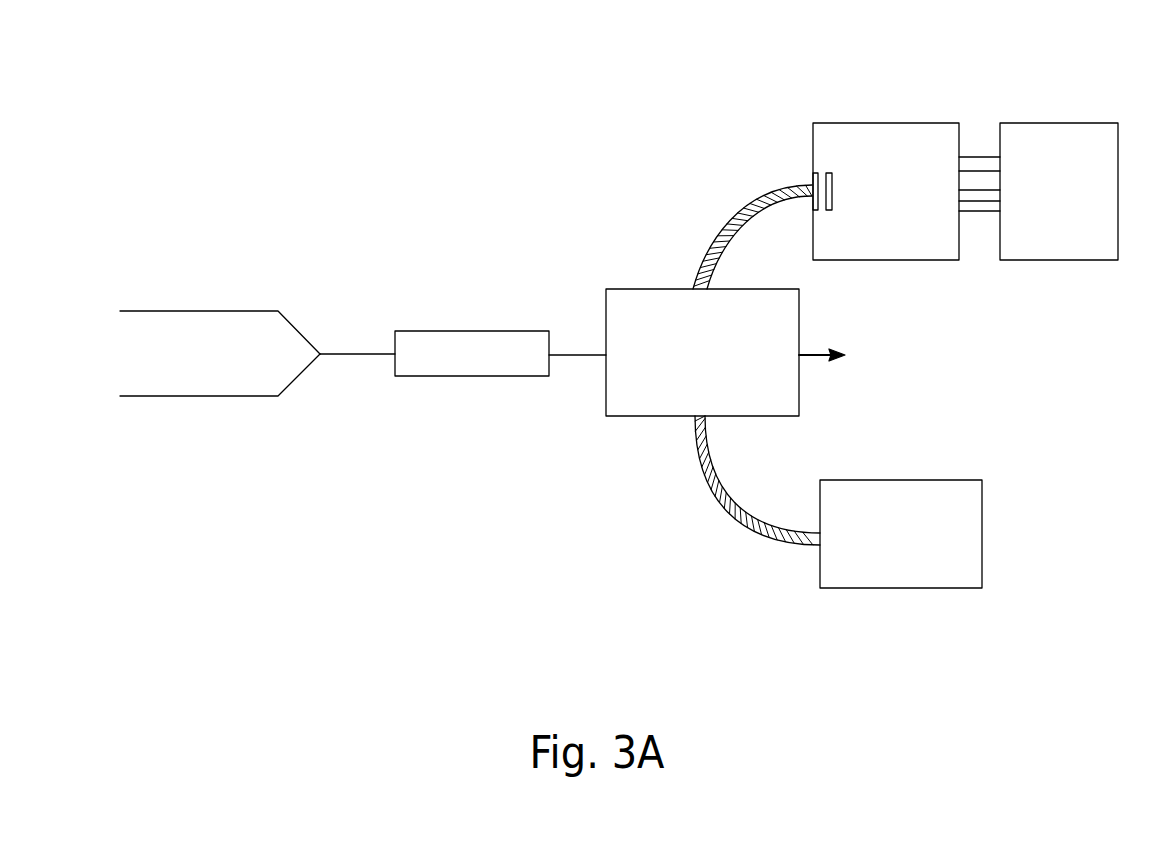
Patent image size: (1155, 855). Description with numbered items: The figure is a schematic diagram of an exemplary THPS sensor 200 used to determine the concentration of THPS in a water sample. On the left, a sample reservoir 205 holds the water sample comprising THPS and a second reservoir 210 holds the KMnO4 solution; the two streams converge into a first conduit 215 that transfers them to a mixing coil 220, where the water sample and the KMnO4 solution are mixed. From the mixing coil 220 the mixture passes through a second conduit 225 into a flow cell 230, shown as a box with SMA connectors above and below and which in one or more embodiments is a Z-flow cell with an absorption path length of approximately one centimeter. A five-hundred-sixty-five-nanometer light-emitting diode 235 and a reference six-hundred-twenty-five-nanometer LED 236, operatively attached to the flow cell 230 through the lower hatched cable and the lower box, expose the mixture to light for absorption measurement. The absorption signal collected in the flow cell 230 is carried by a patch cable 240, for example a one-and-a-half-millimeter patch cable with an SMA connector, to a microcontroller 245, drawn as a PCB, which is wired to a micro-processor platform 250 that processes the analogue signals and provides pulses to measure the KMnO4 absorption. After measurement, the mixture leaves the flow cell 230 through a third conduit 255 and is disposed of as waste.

The THPS sensor 200 is at (228, 98).
The sample reservoir 205 is at (188, 310).
The reservoir 210 is at (216, 397).
The first conduit 215 is at (357, 357).
The mixing coil 220 is at (456, 377).
The second conduit 225 is at (575, 357).
The flow cell 230 is at (603, 407).
The 565-nm light-emitting diode 235 is at (829, 517).
The reference 625-nm LED 236 is at (820, 571).
The patch cable 240 is at (718, 220).
The microcontroller 245 is at (888, 123).
The micro-processor platform 250 is at (1050, 123).
The third conduit 255 is at (810, 358).